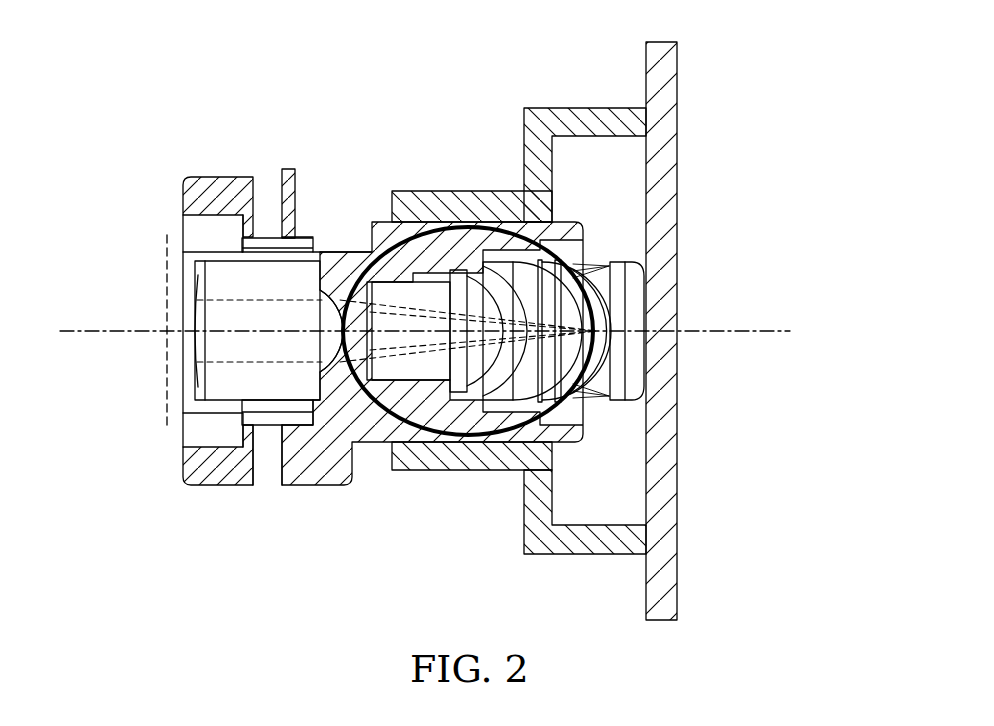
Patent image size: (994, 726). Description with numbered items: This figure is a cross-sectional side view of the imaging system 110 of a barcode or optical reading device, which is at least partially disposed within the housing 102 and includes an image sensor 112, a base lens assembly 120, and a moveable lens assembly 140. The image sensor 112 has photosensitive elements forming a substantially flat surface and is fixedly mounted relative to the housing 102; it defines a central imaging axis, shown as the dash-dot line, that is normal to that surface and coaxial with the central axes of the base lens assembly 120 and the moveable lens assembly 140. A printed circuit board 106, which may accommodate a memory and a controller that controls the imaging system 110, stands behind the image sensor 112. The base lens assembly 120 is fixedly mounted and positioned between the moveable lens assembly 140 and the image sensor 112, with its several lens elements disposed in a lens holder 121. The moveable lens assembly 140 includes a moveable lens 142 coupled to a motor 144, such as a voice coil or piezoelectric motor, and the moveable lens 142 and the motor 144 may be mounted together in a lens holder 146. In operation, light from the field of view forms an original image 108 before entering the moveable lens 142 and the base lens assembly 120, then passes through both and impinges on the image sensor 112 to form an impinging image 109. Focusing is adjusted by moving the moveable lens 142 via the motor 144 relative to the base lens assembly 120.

The imaging system 110 is at (158, 60).
The housing 102 is at (588, 115).
The printed circuit board 106 is at (672, 73).
The original image 108 is at (160, 411).
The impinging image 109 is at (604, 400).
The image sensor 112 is at (614, 262).
The base lens assembly 120 is at (448, 415).
The lens holder 121 is at (377, 228).
The moveable lens assembly 140 is at (299, 448).
The moveable lens 142 is at (205, 390).
The motor 144 is at (250, 432).
The lens holder 146 is at (214, 190).